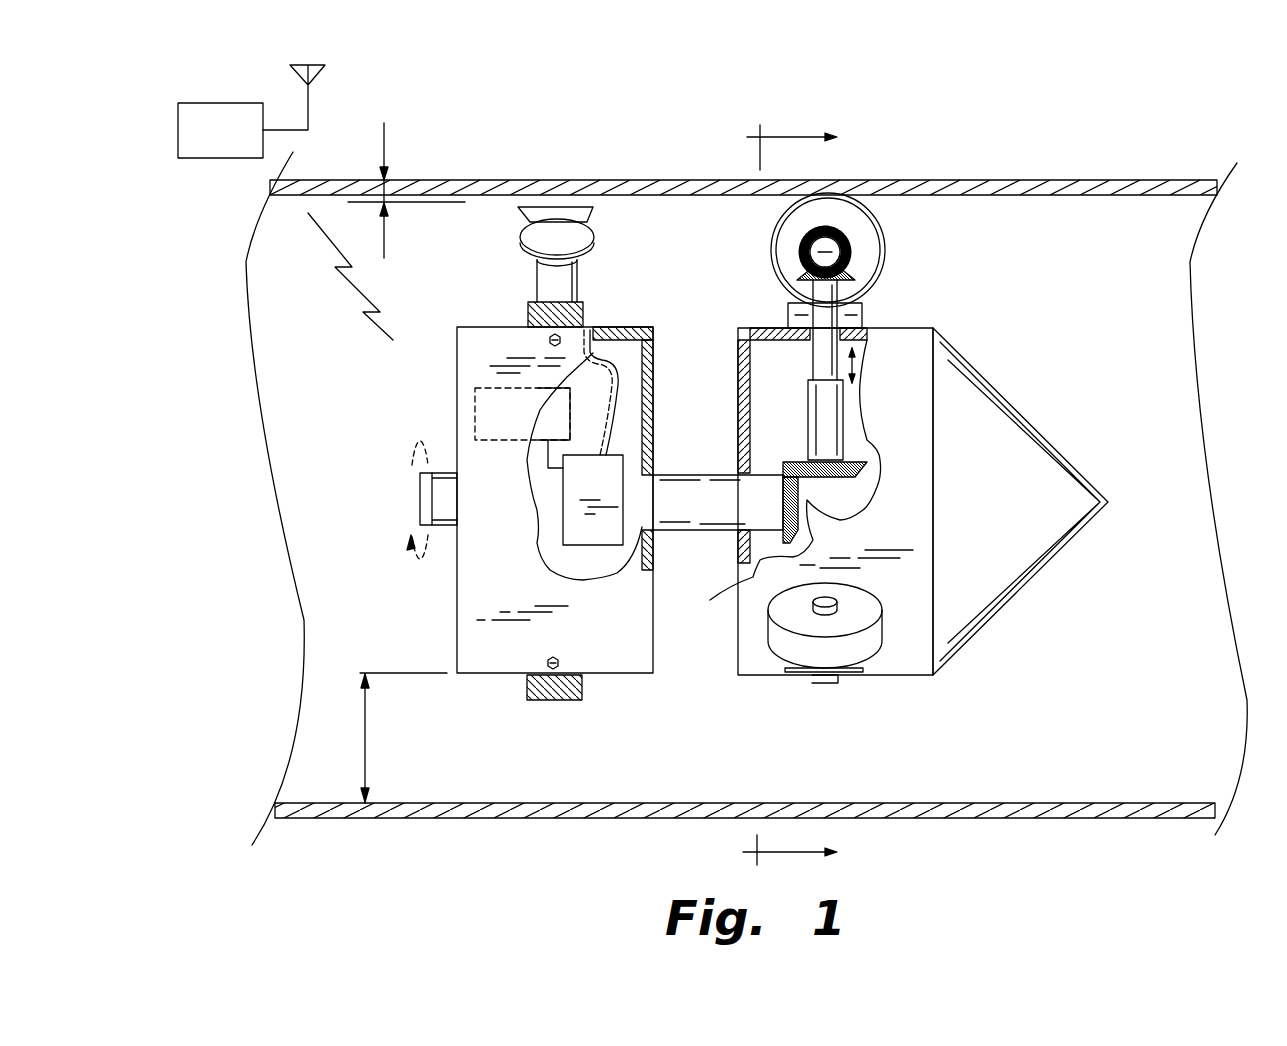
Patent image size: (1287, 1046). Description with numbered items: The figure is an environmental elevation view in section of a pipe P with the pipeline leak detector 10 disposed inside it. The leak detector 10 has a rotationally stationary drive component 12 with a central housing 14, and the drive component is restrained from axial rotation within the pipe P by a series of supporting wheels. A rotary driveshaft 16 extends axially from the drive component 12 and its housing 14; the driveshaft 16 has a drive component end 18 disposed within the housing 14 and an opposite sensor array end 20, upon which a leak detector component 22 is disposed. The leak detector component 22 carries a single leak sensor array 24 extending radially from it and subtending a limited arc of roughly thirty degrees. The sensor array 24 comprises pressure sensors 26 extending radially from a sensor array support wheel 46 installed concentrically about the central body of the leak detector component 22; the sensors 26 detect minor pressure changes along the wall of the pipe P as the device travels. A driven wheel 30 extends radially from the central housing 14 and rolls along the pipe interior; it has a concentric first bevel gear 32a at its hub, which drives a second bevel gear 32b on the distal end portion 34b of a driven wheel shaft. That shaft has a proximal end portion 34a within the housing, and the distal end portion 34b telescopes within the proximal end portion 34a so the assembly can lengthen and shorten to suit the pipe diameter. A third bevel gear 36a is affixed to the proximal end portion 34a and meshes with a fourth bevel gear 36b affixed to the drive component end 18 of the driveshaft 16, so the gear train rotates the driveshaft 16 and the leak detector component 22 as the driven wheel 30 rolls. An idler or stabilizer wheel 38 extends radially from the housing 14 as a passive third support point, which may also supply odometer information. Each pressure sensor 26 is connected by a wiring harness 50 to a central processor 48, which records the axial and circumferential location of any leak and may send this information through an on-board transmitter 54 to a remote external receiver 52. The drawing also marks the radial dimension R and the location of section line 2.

The pipeline leak detector 10 is at (640, 165).
The rotationally stationary drive component 12 is at (1015, 323).
The central housing 14 is at (1010, 597).
The rotary driveshaft 16 is at (682, 530).
The drive component end 18 is at (763, 560).
The sensor array end 20 is at (670, 475).
The leak detector component 22 is at (437, 583).
The leak sensor array 24 is at (497, 247).
The pressure sensors 26 is at (592, 210).
The driven wheel 30 is at (880, 232).
The first bevel gear 32a is at (805, 240).
The second bevel gear 32b is at (805, 262).
The proximal end portion 34a is at (808, 427).
The distal end portion 34b is at (813, 372).
The third bevel gear 36a is at (865, 455).
The fourth bevel gear 36b is at (865, 527).
The idler or stabilizer wheel 38 is at (782, 665).
The sensor array support wheel 46 is at (528, 320).
The central processor 48 is at (533, 537).
The wiring harness 50 is at (655, 385).
The remote external receiver 52 is at (212, 158).
The on-board transmitter 54 is at (475, 420).
The pipe P is at (1092, 180).
The pipe radius R is at (365, 725).
The section line 2 is at (803, 496).